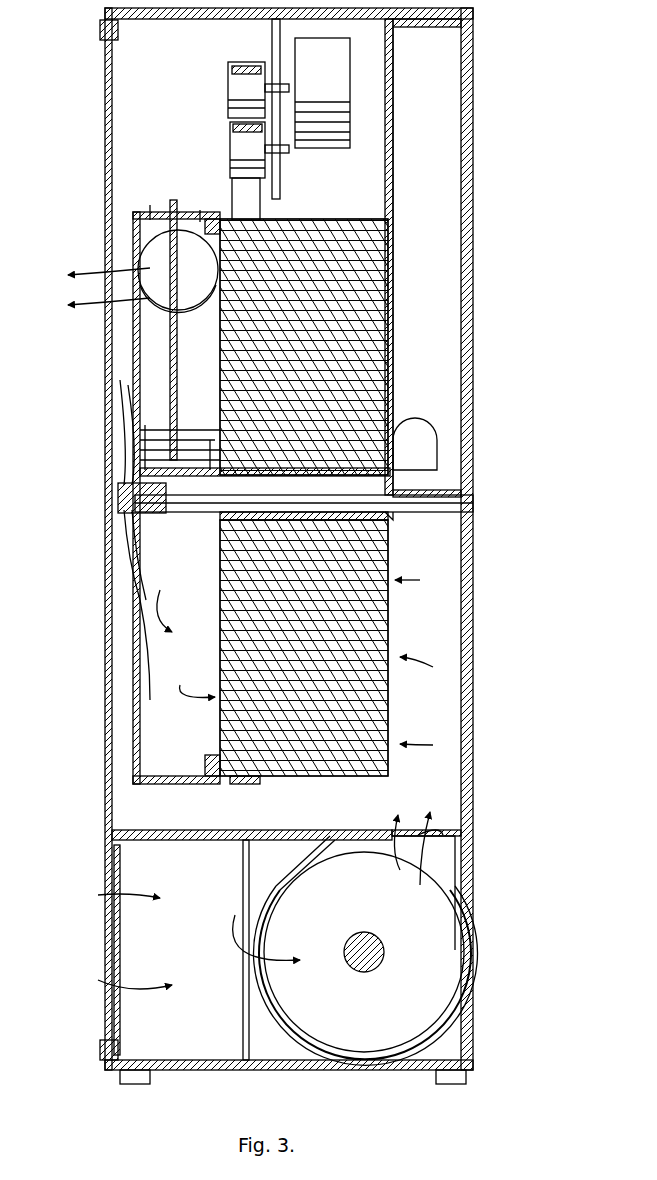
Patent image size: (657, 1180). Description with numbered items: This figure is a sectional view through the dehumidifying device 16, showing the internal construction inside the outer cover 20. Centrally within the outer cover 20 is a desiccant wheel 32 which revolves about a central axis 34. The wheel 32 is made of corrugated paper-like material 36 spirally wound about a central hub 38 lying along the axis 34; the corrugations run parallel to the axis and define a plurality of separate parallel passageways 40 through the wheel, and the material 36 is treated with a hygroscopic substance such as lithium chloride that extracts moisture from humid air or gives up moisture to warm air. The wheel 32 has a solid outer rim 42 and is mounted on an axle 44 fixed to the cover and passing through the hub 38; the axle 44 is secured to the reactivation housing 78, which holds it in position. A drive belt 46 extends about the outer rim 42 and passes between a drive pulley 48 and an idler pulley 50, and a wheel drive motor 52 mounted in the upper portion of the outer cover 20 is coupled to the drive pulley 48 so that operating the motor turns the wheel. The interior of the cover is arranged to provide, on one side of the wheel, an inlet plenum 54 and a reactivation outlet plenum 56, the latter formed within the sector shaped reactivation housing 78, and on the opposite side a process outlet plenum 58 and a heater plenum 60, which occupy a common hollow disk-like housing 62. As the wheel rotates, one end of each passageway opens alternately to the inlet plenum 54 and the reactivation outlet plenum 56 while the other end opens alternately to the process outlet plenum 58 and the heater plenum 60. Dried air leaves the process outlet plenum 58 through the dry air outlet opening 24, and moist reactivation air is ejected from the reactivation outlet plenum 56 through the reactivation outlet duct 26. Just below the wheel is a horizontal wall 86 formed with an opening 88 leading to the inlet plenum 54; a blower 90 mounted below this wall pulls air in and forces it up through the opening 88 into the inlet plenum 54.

The dehumidifying device 16 is at (540, 104).
The outer cover 20 is at (473, 37).
The dry air outlet opening 24 is at (150, 212).
The reactivation outlet duct 26 is at (440, 418).
The desiccant wheel 32 is at (388, 716).
The central axis 34 is at (228, 497).
The corrugated paper-like material 36 is at (375, 335).
The central hub 38 is at (385, 520).
The passageways 40 is at (388, 362).
The outer rim 42 is at (320, 218).
The axle 44 is at (150, 512).
The drive belt 46 is at (238, 193).
The drive pulley 48 is at (232, 92).
The idler pulley 50 is at (245, 150).
The wheel drive motor 52 is at (350, 64).
The inlet plenum 54 is at (455, 640).
The reactivation outlet plenum 56 is at (445, 272).
The process outlet plenum 58 is at (160, 665).
The heater plenum 60 is at (145, 356).
The housing 62 is at (140, 752).
The reactivation housing 78 is at (474, 144).
The horizontal wall 86 is at (165, 830).
The opening 88 is at (372, 830).
The blower 90 is at (272, 912).